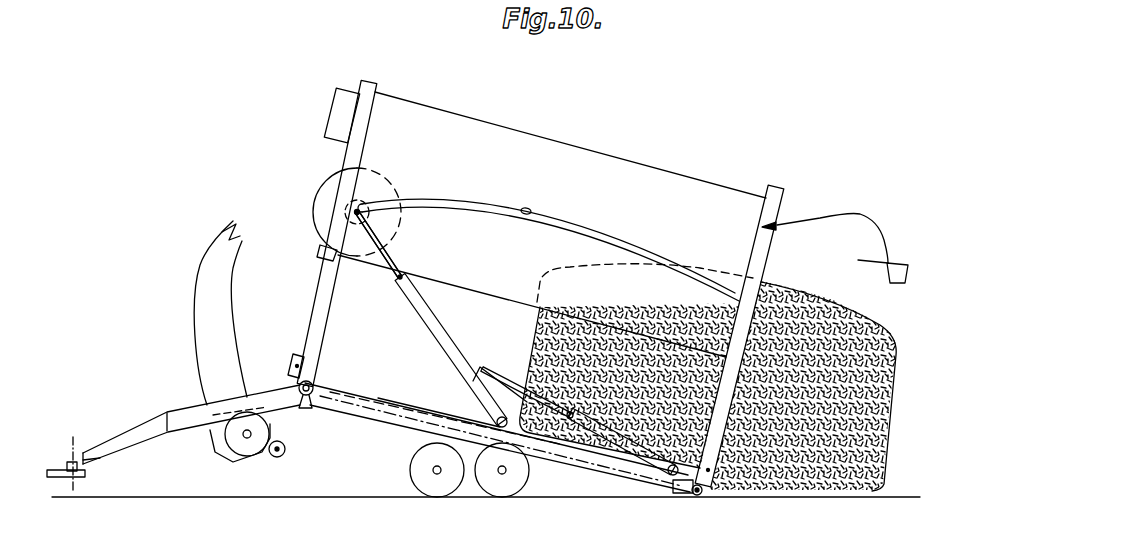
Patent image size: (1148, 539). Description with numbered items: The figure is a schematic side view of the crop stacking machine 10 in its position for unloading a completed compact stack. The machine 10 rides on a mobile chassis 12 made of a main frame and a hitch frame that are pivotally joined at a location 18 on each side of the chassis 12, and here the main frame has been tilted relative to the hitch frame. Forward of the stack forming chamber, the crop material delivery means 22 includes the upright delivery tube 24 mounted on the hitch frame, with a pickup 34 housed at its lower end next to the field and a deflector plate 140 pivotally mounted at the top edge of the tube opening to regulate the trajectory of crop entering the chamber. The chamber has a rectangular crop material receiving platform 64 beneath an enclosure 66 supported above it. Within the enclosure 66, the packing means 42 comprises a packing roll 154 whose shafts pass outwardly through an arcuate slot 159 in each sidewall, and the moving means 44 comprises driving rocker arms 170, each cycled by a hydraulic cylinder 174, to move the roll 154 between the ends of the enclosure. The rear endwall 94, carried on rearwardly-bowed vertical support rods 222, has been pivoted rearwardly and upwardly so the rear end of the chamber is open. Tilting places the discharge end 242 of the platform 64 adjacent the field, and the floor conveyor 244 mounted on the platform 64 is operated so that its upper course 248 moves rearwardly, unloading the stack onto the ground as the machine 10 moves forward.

The machine 10 is at (693, 136).
The mobile chassis 12 is at (360, 428).
The pivotal mounting location 18 is at (288, 383).
The crop material delivery means 22 is at (241, 317).
The upright delivery tube 24 is at (194, 276).
The pickup 34 is at (228, 455).
The packing means 42 is at (308, 216).
The moving means 44 is at (458, 334).
The crop material receiving platform 64 is at (403, 403).
The enclosure 66 is at (514, 127).
The rear endwall 94 is at (896, 262).
The deflector plate 140 is at (226, 230).
The packing roll 154 is at (320, 190).
The arcuate slot 159 is at (531, 209).
The driving rocker arm 170 is at (410, 299).
The hydraulic cylinder 174 is at (600, 437).
The vertical support rod 222 is at (847, 209).
The discharge end 242 is at (706, 492).
The floor conveyor 244 is at (378, 400).
The upper course 248 is at (328, 386).